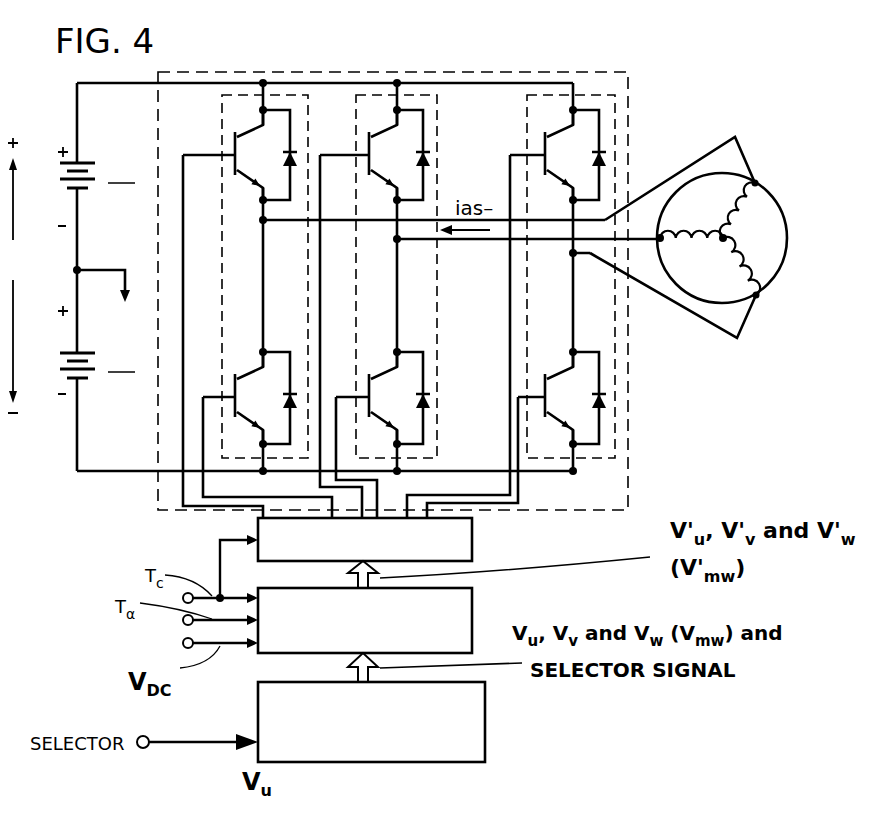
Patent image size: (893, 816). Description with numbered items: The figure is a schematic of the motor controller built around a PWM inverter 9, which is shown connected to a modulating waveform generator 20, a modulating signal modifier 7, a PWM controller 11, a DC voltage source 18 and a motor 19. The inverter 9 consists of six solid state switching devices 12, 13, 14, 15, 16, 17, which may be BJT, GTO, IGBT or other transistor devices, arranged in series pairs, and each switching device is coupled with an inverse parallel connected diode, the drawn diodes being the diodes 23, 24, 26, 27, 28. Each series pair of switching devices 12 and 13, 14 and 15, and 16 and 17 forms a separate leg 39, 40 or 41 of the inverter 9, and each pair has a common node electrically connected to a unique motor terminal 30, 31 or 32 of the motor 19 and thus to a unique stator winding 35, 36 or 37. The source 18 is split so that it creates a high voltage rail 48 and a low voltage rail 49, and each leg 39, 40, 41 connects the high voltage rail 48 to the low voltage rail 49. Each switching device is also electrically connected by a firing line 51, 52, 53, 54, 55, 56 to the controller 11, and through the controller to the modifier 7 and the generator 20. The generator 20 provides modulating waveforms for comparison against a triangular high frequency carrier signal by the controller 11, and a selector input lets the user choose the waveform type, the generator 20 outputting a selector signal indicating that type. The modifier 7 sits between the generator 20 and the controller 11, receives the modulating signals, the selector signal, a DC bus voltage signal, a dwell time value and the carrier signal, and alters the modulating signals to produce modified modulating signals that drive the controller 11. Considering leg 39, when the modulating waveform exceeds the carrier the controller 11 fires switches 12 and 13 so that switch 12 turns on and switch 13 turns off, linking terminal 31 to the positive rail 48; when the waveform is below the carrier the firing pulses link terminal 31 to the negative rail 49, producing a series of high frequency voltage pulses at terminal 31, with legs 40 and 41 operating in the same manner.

The DC voltage source 18 is at (58, 110).
The high voltage rail 48 is at (130, 84).
The low voltage rail 49 is at (94, 471).
The PWM inverter 9 is at (628, 475).
The first leg 39 is at (233, 108).
The second leg 40 is at (376, 115).
The third leg 41 is at (545, 108).
The switching device 12 is at (275, 112).
The switching device 13 is at (276, 354).
The switching device 14 is at (408, 108).
The switching device 15 is at (408, 352).
The switching device 16 is at (588, 110).
The switching device 17 is at (588, 358).
The inverse parallel connected diode 23 is at (295, 155).
The inverse parallel connected diode 24 is at (283, 404).
The inverse parallel connected diode 26 is at (432, 400).
The inverse parallel connected diode 27 is at (605, 158).
The inverse parallel connected diode 28 is at (607, 405).
The firing line 51 is at (193, 512).
The firing line 52 is at (268, 500).
The firing line 53 is at (322, 375).
The firing line 54 is at (338, 452).
The firing line 55 is at (458, 493).
The firing line 56 is at (522, 502).
The motor 19 is at (775, 190).
The motor terminal 30 is at (678, 232).
The motor terminal 31 is at (758, 182).
The motor terminal 32 is at (757, 296).
The stator winding 35 is at (687, 238).
The stator winding 36 is at (728, 170).
The stator winding 37 is at (727, 238).
The PWM controller 11 is at (478, 538).
The modulating signal modifier 7 is at (475, 618).
The modulating waveform generator 20 is at (487, 712).